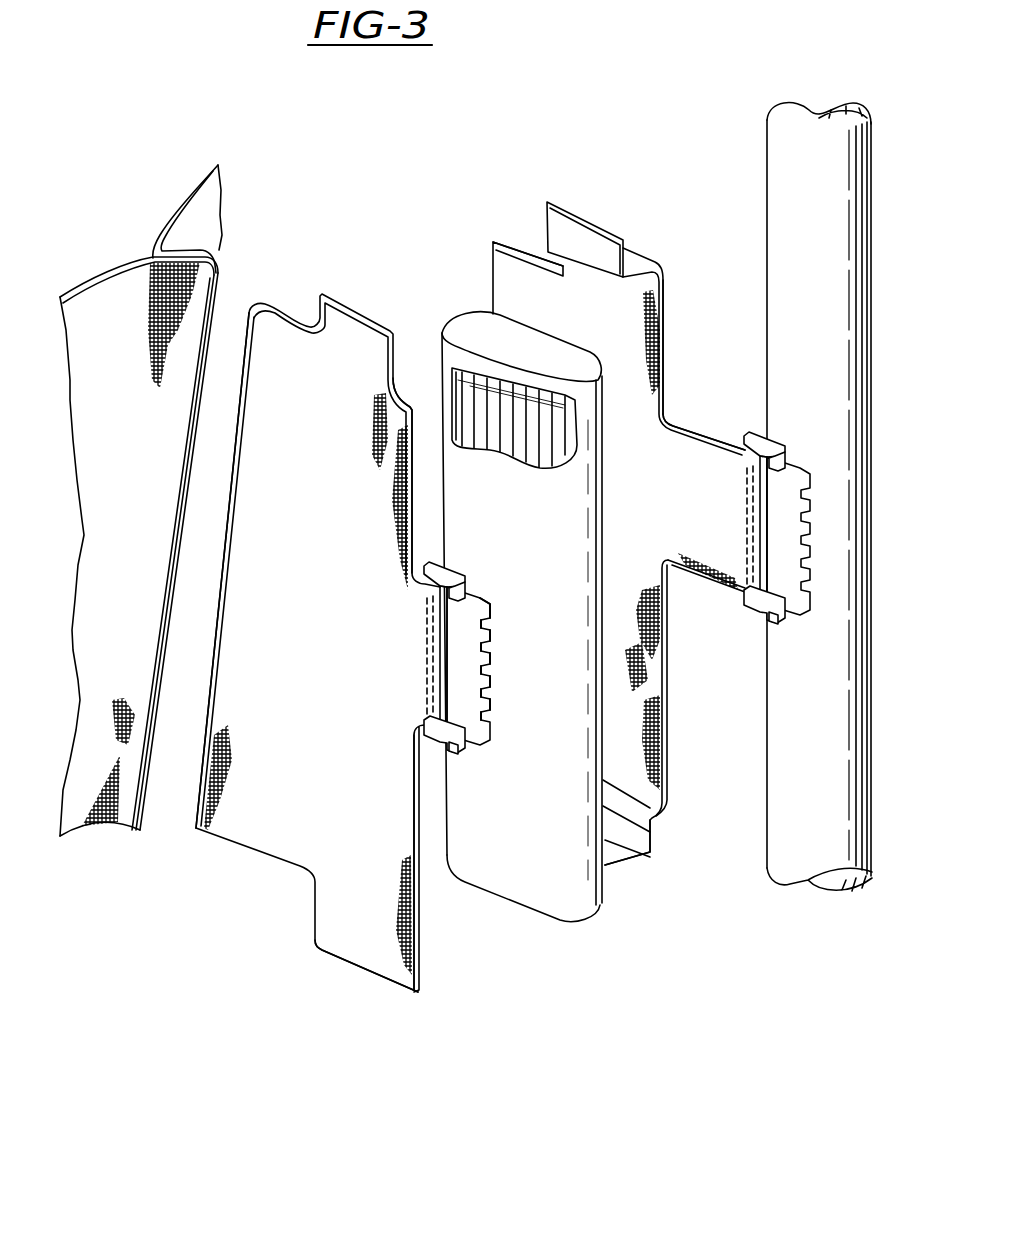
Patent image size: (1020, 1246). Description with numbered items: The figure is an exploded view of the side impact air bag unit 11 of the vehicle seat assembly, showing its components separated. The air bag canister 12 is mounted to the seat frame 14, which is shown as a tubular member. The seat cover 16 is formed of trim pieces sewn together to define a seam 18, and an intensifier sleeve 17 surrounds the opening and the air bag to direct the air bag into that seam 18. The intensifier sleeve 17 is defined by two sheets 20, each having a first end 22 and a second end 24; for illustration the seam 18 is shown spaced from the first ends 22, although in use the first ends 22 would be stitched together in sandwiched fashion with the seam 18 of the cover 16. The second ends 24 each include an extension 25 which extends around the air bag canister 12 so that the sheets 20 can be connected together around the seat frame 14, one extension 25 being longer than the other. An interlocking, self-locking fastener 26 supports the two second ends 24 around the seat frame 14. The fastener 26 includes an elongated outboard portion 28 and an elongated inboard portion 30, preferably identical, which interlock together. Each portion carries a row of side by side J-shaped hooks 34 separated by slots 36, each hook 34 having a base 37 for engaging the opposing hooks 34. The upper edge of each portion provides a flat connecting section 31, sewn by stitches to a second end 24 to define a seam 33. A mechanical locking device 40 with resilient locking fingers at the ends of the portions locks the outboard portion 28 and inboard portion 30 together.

The side impact air bag unit 11 is at (146, 166).
The air bag canister 12 is at (458, 320).
The seat frame 14 is at (770, 153).
The cover 16 is at (205, 191).
The intensifier sleeve 17 is at (358, 990).
The seam 18 is at (202, 251).
The sheet 20 is at (262, 840).
The first end 22 is at (221, 668).
The second end 24 is at (422, 982).
The extension 25 is at (412, 590).
The interlocking fastener 26 is at (616, 564).
The outboard portion 28 is at (466, 605).
The inboard portion 30 is at (737, 455).
The flat connecting section 31 is at (426, 598).
The seam 33 is at (425, 670).
The J-shaped hook 34 is at (490, 665).
The slot 36 is at (493, 722).
The base 37 is at (806, 478).
The mechanical locking device 40 is at (487, 766).